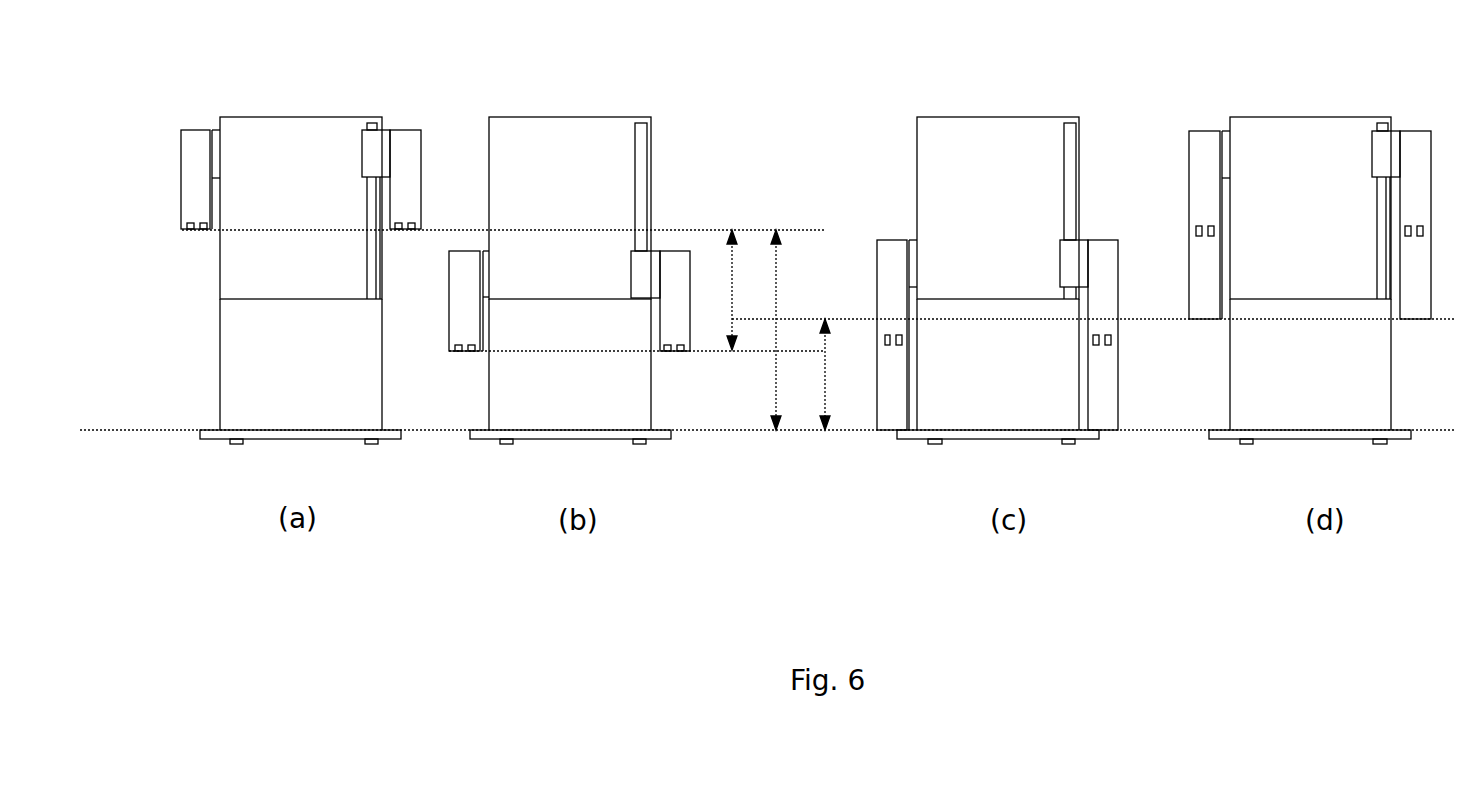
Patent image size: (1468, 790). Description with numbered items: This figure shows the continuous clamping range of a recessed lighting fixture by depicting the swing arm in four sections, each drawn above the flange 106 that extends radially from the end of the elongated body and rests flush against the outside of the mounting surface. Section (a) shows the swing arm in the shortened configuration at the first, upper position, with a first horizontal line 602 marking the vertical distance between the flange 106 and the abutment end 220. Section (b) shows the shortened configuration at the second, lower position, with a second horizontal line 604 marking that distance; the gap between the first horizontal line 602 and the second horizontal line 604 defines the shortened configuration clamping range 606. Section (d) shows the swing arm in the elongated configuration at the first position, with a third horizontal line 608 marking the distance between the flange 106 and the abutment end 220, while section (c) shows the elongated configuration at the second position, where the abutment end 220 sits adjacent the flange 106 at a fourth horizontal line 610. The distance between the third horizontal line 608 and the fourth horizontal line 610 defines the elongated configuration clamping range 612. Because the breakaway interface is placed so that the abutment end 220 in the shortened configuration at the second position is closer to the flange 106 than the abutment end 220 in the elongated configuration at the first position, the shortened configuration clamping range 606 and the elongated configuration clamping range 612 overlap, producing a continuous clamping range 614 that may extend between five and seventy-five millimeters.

The flange 106 is at (207, 440).
The abutment end 220 is at (193, 231).
The first horizontal line 602 is at (456, 230).
The second horizontal line 604 is at (507, 352).
The shortened configuration clamping range 606 is at (732, 285).
The third horizontal line 608 is at (1157, 318).
The fourth horizontal line 610 is at (1167, 432).
The elongated configuration clamping range 612 is at (825, 383).
The continuous clamping range 614 is at (776, 385).